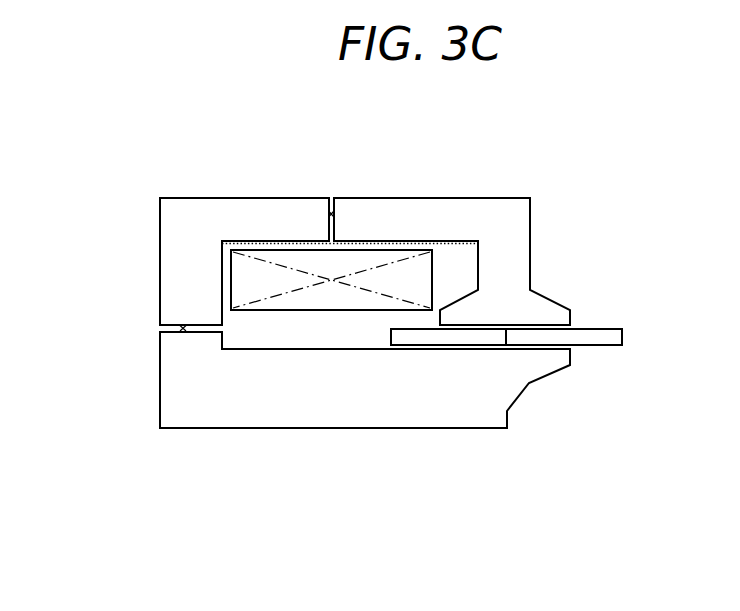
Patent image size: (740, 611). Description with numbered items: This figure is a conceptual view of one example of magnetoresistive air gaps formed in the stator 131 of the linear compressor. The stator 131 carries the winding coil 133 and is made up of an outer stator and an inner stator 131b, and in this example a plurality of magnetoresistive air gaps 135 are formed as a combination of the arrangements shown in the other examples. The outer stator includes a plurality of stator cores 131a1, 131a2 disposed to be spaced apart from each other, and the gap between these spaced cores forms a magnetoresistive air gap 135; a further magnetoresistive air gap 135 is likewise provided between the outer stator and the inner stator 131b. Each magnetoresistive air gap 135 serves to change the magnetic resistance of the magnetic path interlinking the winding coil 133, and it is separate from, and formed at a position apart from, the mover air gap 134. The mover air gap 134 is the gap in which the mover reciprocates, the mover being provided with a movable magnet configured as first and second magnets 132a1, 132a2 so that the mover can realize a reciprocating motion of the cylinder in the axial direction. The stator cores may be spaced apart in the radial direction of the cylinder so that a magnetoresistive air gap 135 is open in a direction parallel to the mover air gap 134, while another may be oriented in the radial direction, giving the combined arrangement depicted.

The stator 131 is at (148, 244).
The stator core 131a1 is at (243, 212).
The stator core 131a2 is at (455, 212).
The inner stator 131b is at (311, 416).
The winding coil 133 is at (383, 270).
The mover air gap 134 is at (521, 326).
The magnetoresistive air gap 135 is at (331, 211).
The first magnet 132a1 is at (452, 349).
The second magnet 132a2 is at (585, 349).